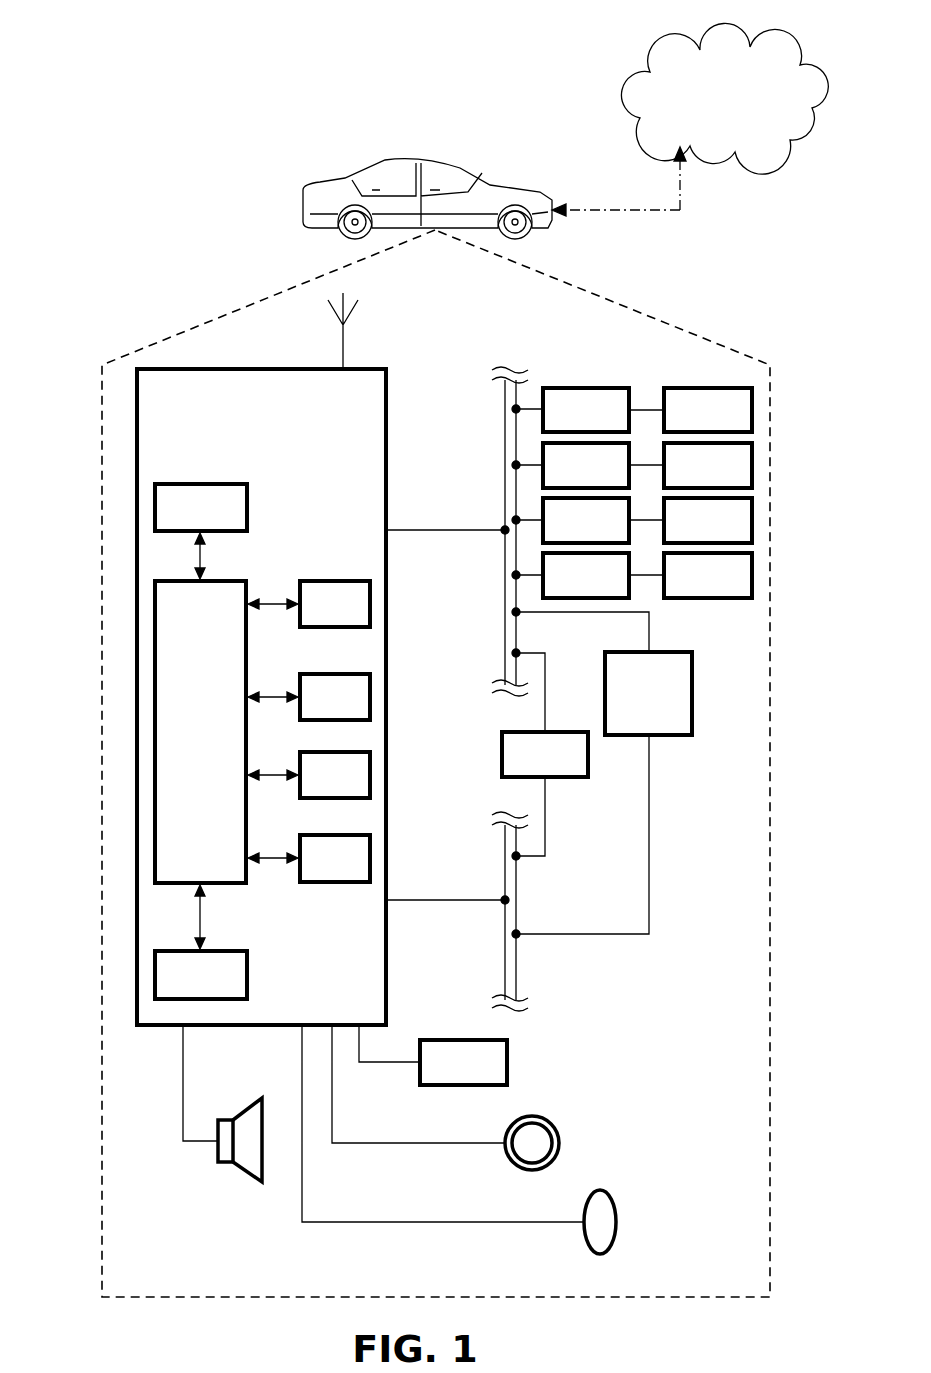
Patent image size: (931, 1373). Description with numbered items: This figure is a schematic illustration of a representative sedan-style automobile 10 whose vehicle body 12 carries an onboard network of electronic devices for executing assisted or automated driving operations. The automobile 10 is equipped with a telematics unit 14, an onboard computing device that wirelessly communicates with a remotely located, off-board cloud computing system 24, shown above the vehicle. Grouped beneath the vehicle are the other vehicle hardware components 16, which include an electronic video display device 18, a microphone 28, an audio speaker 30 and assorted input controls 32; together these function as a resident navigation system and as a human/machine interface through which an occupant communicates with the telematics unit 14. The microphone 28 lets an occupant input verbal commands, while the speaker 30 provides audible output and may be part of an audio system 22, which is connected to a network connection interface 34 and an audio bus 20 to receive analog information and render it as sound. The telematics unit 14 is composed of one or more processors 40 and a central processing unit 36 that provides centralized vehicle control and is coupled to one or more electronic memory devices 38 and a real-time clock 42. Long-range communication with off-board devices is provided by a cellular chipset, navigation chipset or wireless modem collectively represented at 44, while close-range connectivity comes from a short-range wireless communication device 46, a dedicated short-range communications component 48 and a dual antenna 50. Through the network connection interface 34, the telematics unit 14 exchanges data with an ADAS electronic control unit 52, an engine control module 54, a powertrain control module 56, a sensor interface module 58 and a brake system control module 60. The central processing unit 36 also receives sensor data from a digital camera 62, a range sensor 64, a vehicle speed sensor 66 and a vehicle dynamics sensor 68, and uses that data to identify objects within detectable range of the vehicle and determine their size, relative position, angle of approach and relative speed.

The automobile 10 is at (142, 44).
The vehicle body 12 is at (338, 176).
The telematics unit 14 is at (389, 564).
The vehicle hardware components 16 is at (250, 300).
The electronic video display device 18 is at (463, 1062).
The audio bus 20 is at (505, 945).
The audio system 22 is at (604, 793).
The cloud computing system 24 is at (690, 119).
The microphone 28 is at (614, 1200).
The audio speaker 30 is at (244, 1170).
The input controls 32 is at (559, 1132).
The network connection interface 34 is at (505, 598).
The central processing unit 36 is at (226, 741).
The electronic memory device 38 is at (201, 975).
The processor 40 is at (201, 507).
The real-time clock 42 is at (335, 604).
The long-range communication component 44 is at (335, 697).
The short-range wireless communication device 46 is at (335, 775).
The dedicated short-range communications component 48 is at (335, 858).
The dual antenna 50 is at (346, 346).
The ADAS electronic control unit 52 is at (603, 410).
The engine control module 54 is at (708, 410).
The powertrain control module 56 is at (545, 794).
The sensor interface module 58 is at (603, 465).
The brake system control module 60 is at (708, 465).
The digital camera 62 is at (603, 520).
The range sensor 64 is at (708, 520).
The vehicle speed sensor 66 is at (603, 575).
The vehicle dynamics sensor 68 is at (708, 575).